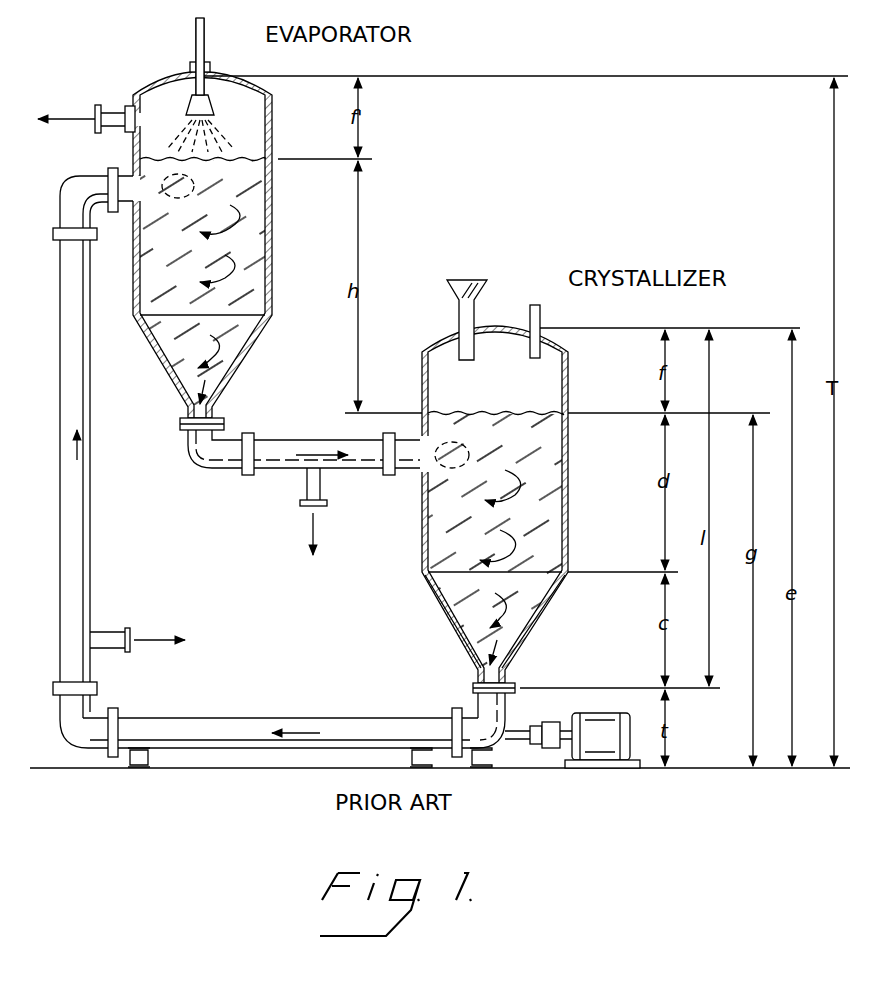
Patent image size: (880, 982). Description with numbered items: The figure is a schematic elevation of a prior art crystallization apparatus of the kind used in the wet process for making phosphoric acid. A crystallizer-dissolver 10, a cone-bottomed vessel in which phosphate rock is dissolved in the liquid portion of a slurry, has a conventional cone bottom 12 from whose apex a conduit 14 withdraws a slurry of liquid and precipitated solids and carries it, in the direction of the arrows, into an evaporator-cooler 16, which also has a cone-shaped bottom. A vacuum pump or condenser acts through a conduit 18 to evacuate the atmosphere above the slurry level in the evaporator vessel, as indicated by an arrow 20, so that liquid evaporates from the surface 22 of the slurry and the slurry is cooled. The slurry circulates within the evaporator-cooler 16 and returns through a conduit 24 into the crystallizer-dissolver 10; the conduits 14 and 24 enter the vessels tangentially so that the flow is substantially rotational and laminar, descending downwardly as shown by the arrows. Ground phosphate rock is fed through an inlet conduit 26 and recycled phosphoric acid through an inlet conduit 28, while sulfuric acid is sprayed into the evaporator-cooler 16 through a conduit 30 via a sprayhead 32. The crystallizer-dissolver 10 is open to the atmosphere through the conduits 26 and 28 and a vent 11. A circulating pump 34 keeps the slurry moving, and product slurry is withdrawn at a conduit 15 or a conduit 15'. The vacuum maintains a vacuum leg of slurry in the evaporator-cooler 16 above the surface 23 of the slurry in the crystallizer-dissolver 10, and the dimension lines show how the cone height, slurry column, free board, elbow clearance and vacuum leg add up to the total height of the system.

The crystallizer-dissolver vessel 10 is at (512, 501).
The vent 11 is at (435, 344).
The cone bottom 12 is at (538, 636).
The conduit 14 is at (60, 540).
The conduit 15 is at (334, 511).
The conduit 15' is at (137, 622).
The evaporator-cooler 16 is at (272, 240).
The conduit 18 is at (121, 108).
The arrow 20 is at (66, 118).
The surface 22 is at (248, 158).
The surface 23 is at (480, 412).
The conduit 24 is at (275, 470).
The inlet conduit 26 is at (462, 282).
The inlet conduit 28 is at (536, 305).
The conduit 30 is at (196, 24).
The sprayhead 32 is at (215, 110).
The circulating pump 34 is at (594, 713).